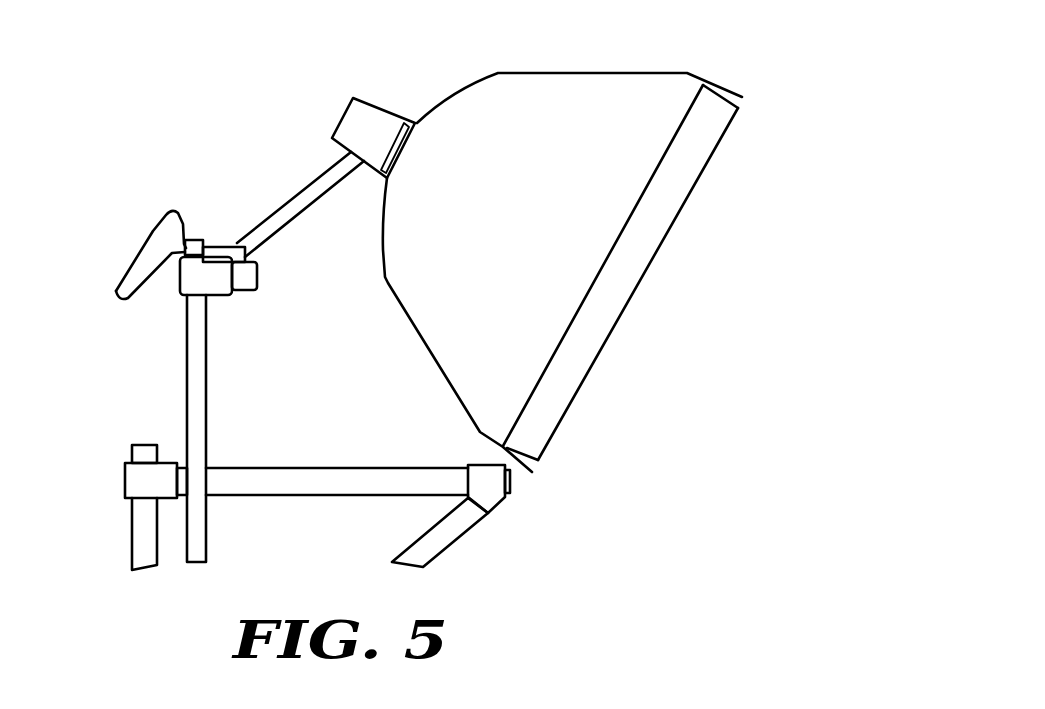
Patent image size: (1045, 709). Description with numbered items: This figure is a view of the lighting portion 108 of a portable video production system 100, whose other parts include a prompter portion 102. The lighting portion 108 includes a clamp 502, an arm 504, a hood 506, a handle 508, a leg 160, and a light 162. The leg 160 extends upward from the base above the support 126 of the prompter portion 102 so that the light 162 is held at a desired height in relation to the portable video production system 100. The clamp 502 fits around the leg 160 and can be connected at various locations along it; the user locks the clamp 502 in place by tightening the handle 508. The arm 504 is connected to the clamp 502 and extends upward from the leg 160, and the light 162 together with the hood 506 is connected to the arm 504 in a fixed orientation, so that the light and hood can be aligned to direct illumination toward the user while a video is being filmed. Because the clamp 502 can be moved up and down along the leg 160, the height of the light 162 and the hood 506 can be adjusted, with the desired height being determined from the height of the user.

The portable video production system 100 is at (780, 60).
The prompter portion 102 is at (563, 478).
The lighting portion 108 is at (128, 128).
The support 126 is at (304, 480).
The leg 160 is at (188, 433).
The light 162 is at (350, 117).
The clamp 502 is at (182, 291).
The arm 504 is at (303, 188).
The hood 506 is at (475, 88).
The handle 508 is at (153, 232).